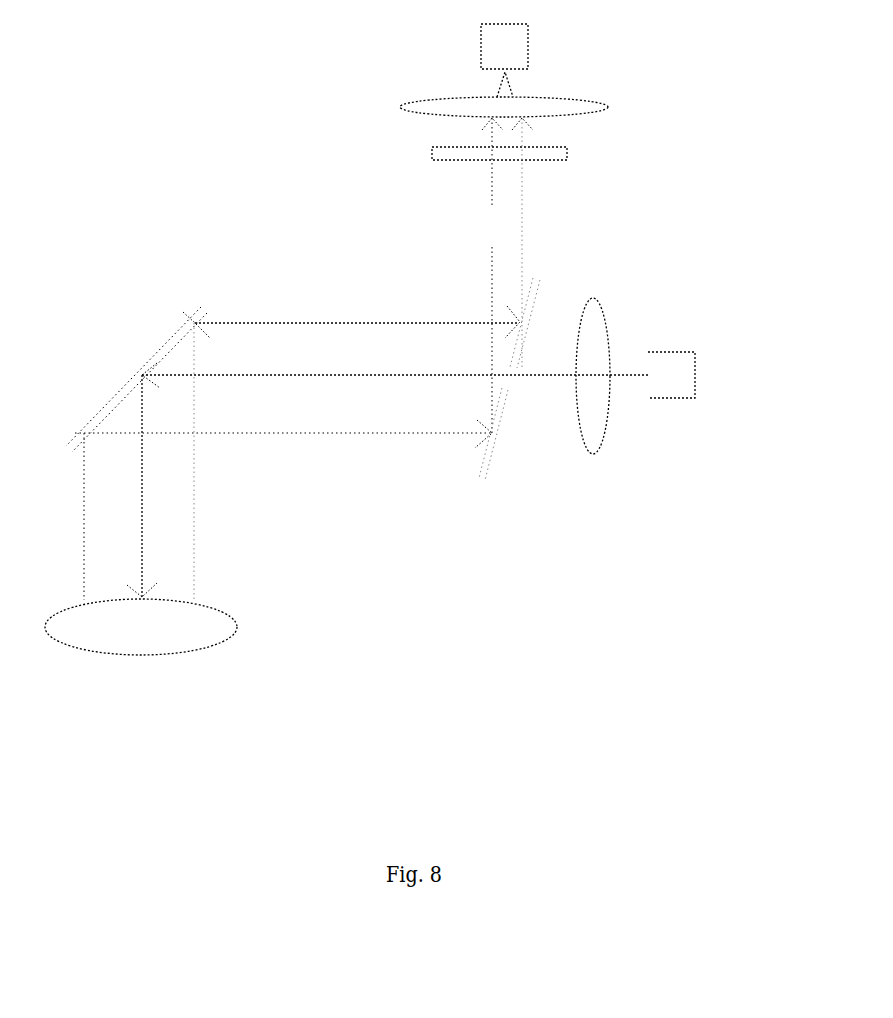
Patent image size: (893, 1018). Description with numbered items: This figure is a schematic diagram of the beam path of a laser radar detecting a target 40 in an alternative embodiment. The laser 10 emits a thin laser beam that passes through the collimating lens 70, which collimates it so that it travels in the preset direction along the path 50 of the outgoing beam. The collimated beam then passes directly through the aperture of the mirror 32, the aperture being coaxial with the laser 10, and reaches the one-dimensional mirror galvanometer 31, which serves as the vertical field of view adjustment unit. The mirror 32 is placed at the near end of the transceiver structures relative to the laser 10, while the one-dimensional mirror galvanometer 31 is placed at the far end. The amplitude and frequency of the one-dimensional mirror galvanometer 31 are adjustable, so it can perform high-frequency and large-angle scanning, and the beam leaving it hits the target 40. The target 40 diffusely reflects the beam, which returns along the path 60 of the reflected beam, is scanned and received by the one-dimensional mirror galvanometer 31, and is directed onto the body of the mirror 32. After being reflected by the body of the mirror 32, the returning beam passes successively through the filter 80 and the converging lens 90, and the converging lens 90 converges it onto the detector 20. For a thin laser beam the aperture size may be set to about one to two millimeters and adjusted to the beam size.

The laser 10 is at (685, 360).
The detector 20 is at (517, 40).
The one-dimensional mirror galvanometer 31 is at (130, 392).
The mirror 32 is at (505, 457).
The target 40 is at (232, 627).
The path of the outgoing beam 50 is at (218, 377).
The path of the reflected beam 60 is at (275, 322).
The collimating lens 70 is at (600, 330).
The filter 80 is at (567, 152).
The converging lens 90 is at (583, 100).